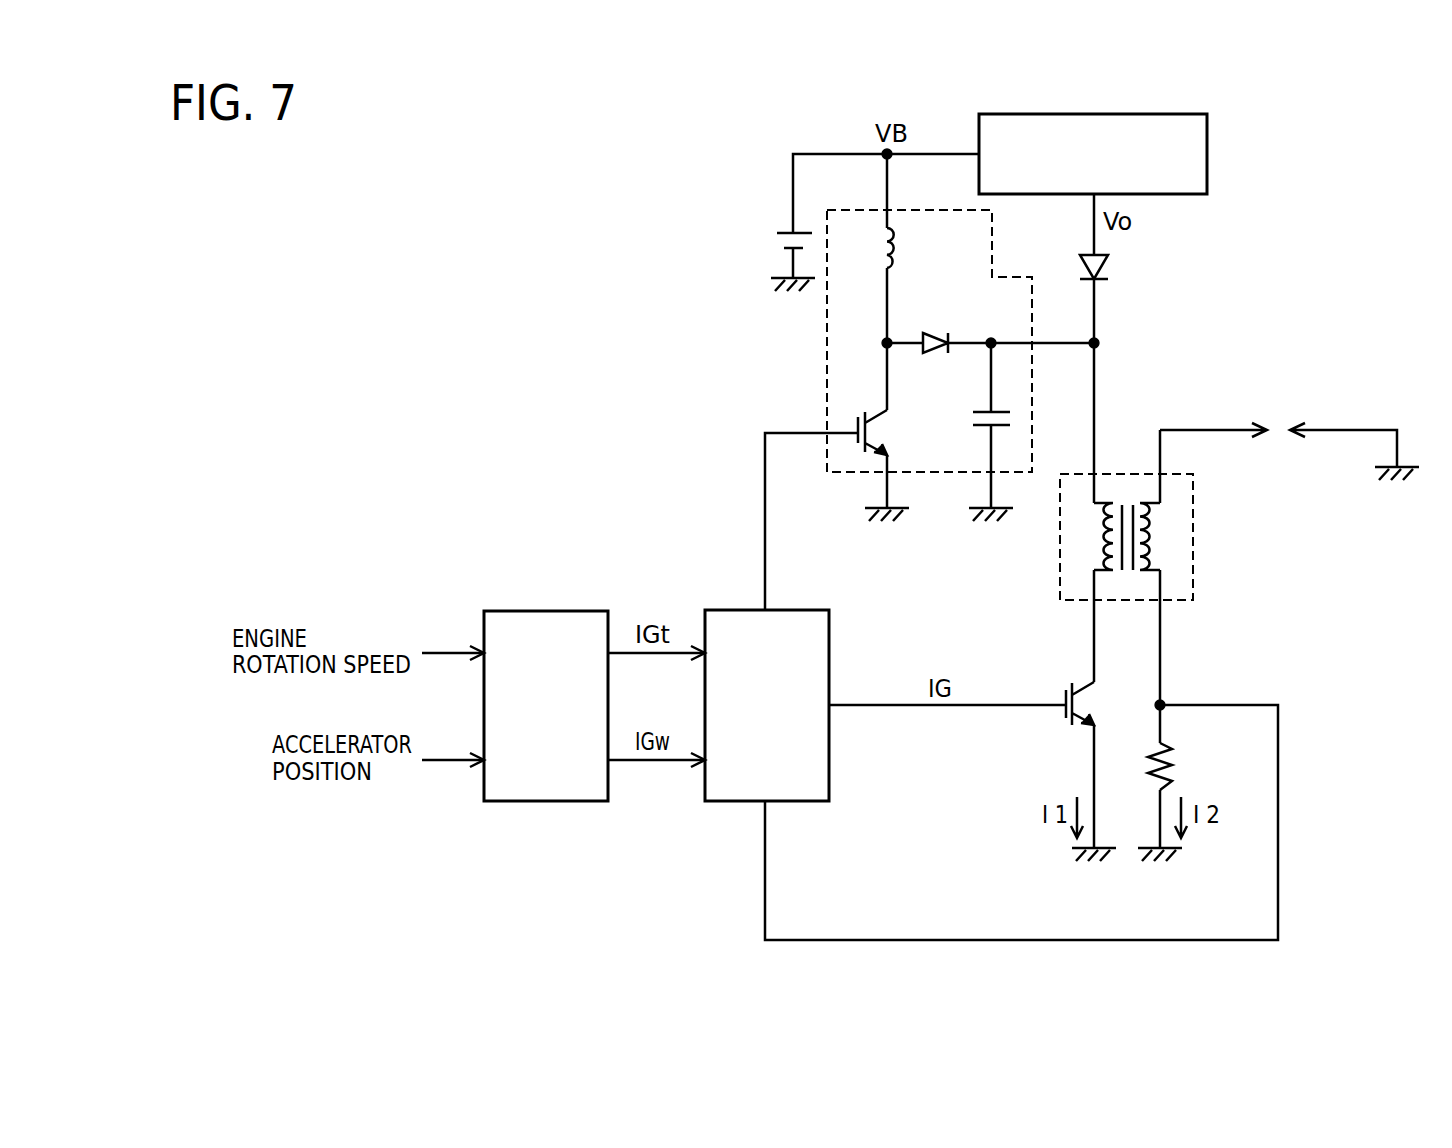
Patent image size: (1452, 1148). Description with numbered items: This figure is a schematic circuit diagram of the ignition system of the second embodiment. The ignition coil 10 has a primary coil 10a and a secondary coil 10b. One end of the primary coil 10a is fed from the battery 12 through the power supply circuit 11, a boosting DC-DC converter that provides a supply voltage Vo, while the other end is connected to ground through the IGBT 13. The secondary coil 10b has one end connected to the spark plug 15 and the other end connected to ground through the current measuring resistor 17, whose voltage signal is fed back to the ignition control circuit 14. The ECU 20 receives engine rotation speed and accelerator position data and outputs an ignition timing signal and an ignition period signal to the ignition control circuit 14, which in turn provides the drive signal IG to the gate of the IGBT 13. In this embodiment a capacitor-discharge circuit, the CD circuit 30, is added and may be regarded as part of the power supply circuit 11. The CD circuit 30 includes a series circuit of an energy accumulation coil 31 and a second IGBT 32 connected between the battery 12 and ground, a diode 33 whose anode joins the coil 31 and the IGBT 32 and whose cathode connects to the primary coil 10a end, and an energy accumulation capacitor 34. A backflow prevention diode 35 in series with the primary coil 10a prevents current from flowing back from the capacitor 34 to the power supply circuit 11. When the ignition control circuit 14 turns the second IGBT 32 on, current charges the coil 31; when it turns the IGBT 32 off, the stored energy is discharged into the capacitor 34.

The ignition coil 10 is at (1133, 537).
The primary coil 10a is at (1094, 546).
The secondary coil 10b is at (1160, 547).
The power supply circuit 11 is at (1006, 113).
The battery 12 is at (785, 230).
The insulated gate bipolar transistor (IGBT) 13 is at (1066, 692).
The ignition control circuit 14 is at (728, 610).
The spark plug 15 is at (1305, 406).
The current measuring resistor 17 is at (1164, 746).
The ECU 20 is at (522, 610).
The capacitor-discharge circuit (CD circuit) 30 is at (827, 328).
The energy accumulation coil 31 is at (912, 246).
The second IGBT 32 is at (858, 420).
The diode 33 is at (937, 332).
The energy accumulation capacitor 34 is at (985, 410).
The backflow prevention diode 35 is at (1110, 266).